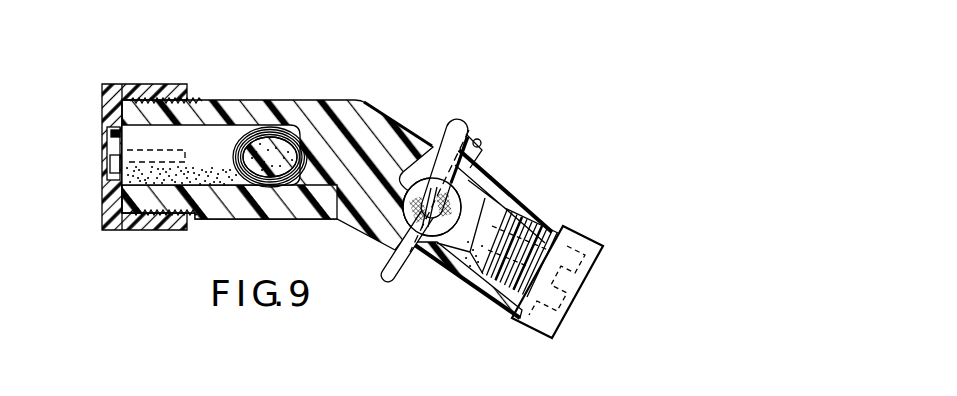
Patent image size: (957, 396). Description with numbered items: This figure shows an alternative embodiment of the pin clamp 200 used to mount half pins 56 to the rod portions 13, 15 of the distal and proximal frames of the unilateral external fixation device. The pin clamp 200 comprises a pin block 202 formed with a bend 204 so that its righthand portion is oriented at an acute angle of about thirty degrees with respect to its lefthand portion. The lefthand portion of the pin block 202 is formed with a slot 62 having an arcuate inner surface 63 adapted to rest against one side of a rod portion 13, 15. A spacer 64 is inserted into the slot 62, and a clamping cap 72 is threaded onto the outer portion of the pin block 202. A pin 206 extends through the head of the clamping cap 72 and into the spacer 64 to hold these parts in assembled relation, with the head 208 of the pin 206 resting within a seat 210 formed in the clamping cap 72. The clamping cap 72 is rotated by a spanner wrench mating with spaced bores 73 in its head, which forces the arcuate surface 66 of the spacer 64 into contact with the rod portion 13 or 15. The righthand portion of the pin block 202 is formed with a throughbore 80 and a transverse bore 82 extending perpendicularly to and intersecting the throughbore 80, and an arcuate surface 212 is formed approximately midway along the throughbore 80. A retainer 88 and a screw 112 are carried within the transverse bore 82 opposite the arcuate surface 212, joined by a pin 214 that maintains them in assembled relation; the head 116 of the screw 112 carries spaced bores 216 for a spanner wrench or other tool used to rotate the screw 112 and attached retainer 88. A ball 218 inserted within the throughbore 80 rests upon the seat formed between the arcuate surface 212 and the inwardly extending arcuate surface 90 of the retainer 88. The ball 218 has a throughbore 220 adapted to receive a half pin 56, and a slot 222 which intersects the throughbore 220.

The pin clamp 200 is at (449, 78).
The pin block 202 is at (377, 117).
The bend 204 is at (337, 220).
The pin 206 is at (108, 158).
The head 208 is at (100, 168).
The seat 210 is at (110, 134).
The arcuate surface 212 is at (398, 163).
The pin 214 is at (573, 208).
The spaced bores 216 is at (562, 324).
The ball 218 is at (381, 279).
The throughbore 220 is at (484, 121).
The slot 222 is at (413, 262).
The half pin 56 is at (483, 144).
The slot 62 is at (268, 142).
The arcuate inner surface 63 is at (330, 147).
The spacer 64 is at (220, 130).
The arcuate surface 66 is at (229, 168).
The clamping cap 72 is at (160, 84).
The spaced bores 73 is at (110, 125).
The throughbore 80 is at (448, 140).
The transverse bore 82 is at (530, 223).
The retainer 88 is at (485, 199).
The arcuate surface 90 is at (480, 198).
The screw 112 is at (598, 280).
The head 116 is at (592, 240).
The rod portion 13 is at (320, 87).
The rod portion 15 is at (231, 169).